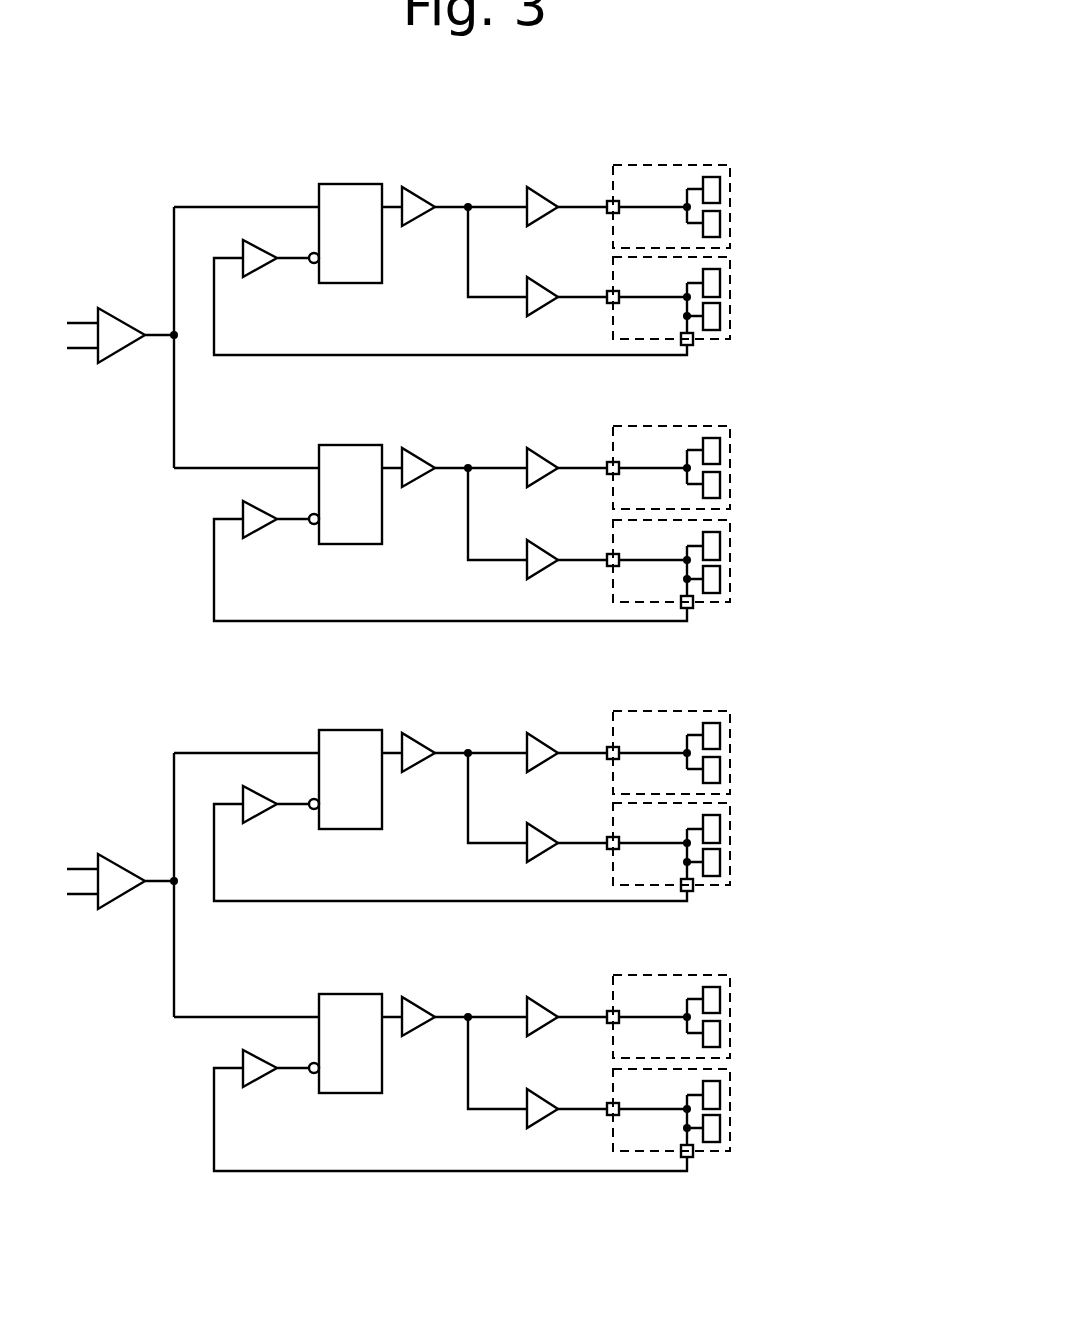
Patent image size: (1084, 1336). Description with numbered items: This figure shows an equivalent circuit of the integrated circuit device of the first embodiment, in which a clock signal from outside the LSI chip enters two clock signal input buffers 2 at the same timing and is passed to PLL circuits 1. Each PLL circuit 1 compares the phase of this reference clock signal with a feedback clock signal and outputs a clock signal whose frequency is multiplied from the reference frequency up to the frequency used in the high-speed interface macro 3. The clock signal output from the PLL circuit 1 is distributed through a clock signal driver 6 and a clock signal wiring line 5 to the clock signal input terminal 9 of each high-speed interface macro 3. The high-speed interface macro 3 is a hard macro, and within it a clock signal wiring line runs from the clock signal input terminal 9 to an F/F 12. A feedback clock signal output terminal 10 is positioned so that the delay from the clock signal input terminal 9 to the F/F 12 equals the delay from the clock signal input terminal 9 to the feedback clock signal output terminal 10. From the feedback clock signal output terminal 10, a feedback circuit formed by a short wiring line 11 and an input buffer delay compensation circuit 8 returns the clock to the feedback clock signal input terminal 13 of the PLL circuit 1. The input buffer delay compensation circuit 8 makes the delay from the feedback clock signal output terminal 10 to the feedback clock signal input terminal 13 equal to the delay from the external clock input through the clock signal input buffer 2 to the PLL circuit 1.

The PLL circuit 1 is at (347, 184).
The clock signal input buffer 2 is at (114, 310).
The high-speed interface macro 3 is at (730, 182).
The clock signal wiring line 5 is at (508, 200).
The clock signal driver 6 is at (420, 190).
The input buffer delay compensation circuit 8 is at (260, 240).
The clock signal input terminal 9 is at (617, 201).
The feedback clock signal output terminal 10 is at (690, 348).
The wiring line 11 is at (395, 355).
The F/F 12 is at (720, 190).
The feedback clock signal input terminal 13 is at (316, 265).